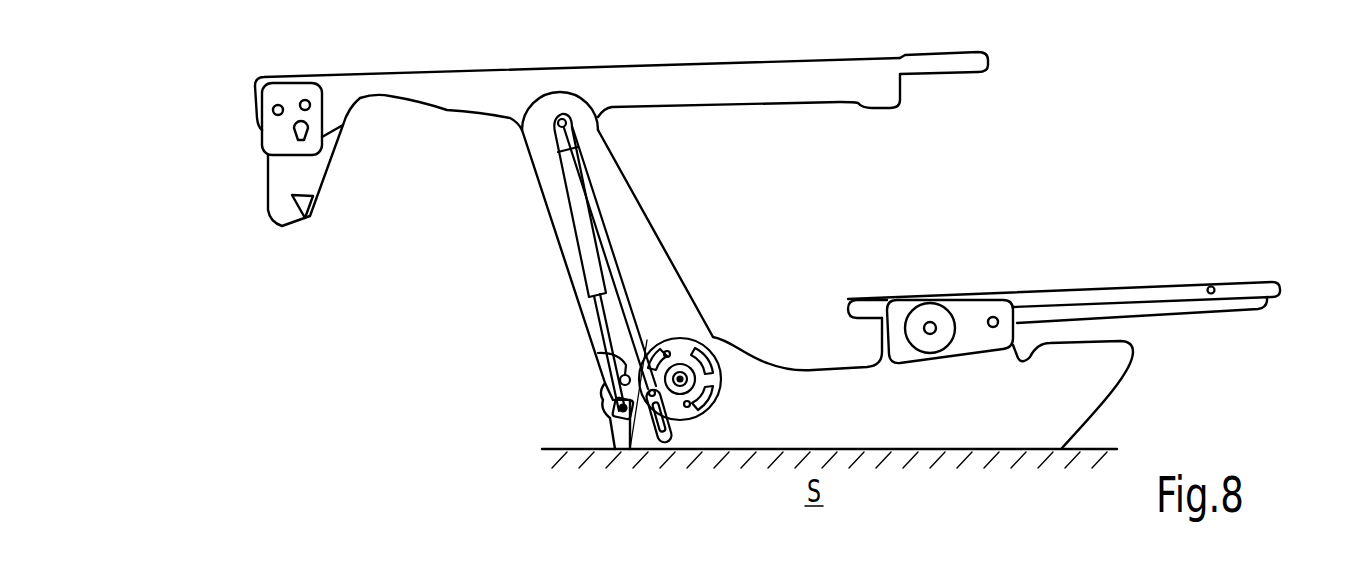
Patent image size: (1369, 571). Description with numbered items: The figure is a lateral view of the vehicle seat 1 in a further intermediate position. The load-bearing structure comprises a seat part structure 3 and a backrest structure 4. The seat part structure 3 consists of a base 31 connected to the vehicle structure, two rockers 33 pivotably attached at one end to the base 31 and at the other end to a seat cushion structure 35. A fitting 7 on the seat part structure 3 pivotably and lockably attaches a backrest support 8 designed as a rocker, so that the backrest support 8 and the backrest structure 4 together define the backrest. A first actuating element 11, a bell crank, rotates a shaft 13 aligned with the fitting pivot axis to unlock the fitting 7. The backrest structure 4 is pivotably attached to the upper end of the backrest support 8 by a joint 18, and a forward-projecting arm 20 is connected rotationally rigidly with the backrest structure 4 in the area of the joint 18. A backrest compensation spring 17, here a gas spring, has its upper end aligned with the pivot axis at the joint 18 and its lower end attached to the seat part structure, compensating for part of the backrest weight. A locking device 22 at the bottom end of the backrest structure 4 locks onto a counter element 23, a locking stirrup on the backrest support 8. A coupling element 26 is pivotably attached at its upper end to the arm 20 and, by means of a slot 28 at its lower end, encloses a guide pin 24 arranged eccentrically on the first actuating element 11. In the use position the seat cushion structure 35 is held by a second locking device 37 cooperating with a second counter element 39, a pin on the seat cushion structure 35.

The vehicle seat 1 is at (1056, 148).
The seat part structure 3 is at (821, 362).
The backrest structure 4 is at (488, 102).
The fitting 7 is at (690, 410).
The backrest support 8 is at (550, 175).
The first actuating element 11 is at (670, 350).
The shaft 13 is at (687, 373).
The backrest compensation spring 17 is at (595, 307).
The joint 18 is at (560, 118).
The arm 20 is at (580, 135).
The locking device 22 is at (270, 128).
The counter element 23 is at (600, 352).
The guide pin 24 is at (650, 396).
The coupling element 26 is at (602, 230).
The slot 28 is at (660, 442).
The base 31 is at (1087, 387).
The rocker 33 is at (967, 317).
The seat cushion structure 35 is at (1118, 295).
The second locking device 37 is at (290, 212).
The second counter element 39 is at (1213, 286).